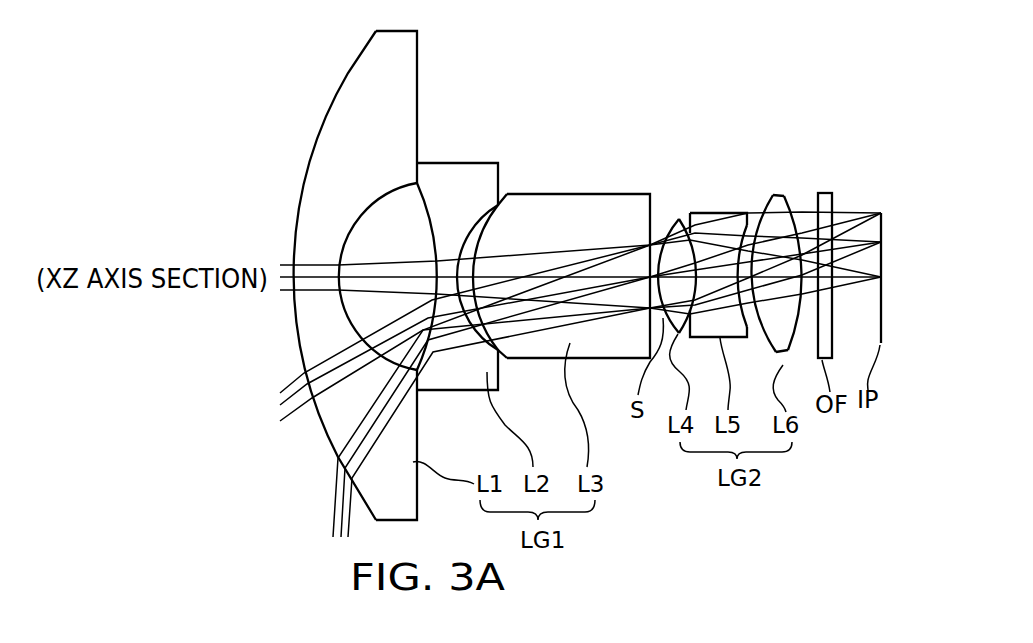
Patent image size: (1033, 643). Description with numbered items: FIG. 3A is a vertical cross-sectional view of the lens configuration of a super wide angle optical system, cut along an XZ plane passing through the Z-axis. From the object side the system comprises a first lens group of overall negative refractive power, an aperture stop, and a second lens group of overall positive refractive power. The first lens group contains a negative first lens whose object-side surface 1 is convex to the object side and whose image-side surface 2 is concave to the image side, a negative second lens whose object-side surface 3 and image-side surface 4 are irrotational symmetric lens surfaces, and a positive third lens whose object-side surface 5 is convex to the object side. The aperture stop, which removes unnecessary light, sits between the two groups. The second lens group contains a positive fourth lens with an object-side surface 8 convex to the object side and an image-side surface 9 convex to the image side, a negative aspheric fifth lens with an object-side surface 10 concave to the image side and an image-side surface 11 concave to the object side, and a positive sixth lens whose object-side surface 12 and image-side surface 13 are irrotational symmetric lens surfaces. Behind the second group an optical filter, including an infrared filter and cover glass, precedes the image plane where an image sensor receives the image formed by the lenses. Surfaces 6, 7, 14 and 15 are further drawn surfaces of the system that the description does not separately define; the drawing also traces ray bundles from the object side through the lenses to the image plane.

The object-side surface of the first lens 1 is at (347, 73).
The image-side surface of the first lens 2 is at (419, 62).
The object-side surface of the second lens 3 is at (420, 198).
The image-side surface of the second lens 4 is at (498, 204).
The object-side surface of the third lens 5 is at (507, 195).
The rear surface of third lens L3 / stop 6 is at (650, 194).
The front surface of fourth lens L4 7 is at (660, 232).
The object-side surface of the fourth lens 8 is at (678, 222).
The image-side surface of the fourth lens 9 is at (689, 228).
The object-side surface of the fifth lens 10 is at (710, 212).
The image-side surface of the fifth lens 11 is at (748, 222).
The object-side surface of the sixth lens 12 is at (774, 194).
The image-side surface of the sixth lens 13 is at (782, 198).
The optical filter OF 14 is at (814, 194).
The image plane IP 15 is at (833, 205).